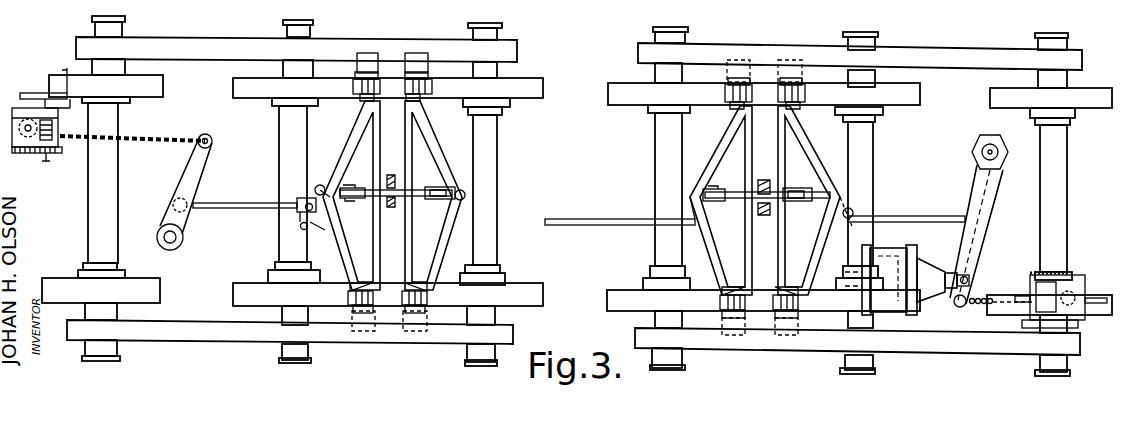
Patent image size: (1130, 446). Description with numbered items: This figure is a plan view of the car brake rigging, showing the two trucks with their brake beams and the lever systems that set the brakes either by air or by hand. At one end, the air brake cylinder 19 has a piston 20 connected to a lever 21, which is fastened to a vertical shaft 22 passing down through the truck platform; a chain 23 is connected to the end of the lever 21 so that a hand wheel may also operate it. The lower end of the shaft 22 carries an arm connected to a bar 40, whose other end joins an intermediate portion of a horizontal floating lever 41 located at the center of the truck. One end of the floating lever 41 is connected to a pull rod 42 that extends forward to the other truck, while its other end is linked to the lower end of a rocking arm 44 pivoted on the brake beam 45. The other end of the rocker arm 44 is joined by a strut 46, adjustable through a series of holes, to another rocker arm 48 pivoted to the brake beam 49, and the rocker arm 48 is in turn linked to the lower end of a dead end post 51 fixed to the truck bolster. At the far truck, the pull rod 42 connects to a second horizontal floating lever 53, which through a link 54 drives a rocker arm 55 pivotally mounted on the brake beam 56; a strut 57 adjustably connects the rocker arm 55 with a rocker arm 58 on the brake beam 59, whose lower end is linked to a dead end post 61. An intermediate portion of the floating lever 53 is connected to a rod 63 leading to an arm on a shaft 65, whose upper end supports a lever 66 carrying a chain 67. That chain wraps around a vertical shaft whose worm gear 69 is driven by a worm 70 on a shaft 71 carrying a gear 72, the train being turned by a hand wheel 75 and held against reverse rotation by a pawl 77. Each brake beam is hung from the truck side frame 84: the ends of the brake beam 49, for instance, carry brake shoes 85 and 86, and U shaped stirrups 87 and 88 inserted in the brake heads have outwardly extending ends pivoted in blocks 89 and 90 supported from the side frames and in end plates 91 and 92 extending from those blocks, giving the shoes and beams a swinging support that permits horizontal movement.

The brake cylinder 19 is at (890, 252).
The piston 20 is at (952, 275).
The lever 21 is at (980, 225).
The vertical shaft 22 is at (992, 150).
The chain 23 is at (978, 304).
The bar 40 is at (925, 216).
The horizontal floating lever 41 is at (855, 213).
The pull rod 42 is at (592, 224).
The rocking arm 44 is at (795, 188).
The brake beam 45 is at (810, 150).
The strut 46 is at (748, 192).
The rocker arm 48 is at (716, 189).
The brake beam 49 is at (722, 141).
The dead end post 51 is at (765, 216).
The second horizontal floating lever 53 is at (297, 203).
The link 54 is at (322, 185).
The rocker arm 55 is at (350, 188).
The brake beam 56 is at (352, 125).
The strut 57 is at (418, 190).
The rocker arm 58 is at (462, 190).
The brake beam 59 is at (432, 136).
The dead end post 61 is at (391, 175).
The rod 63 is at (232, 203).
The shaft 65 is at (160, 230).
The lever 66 is at (192, 154).
The chain 67 is at (200, 137).
The worm gear 69 is at (12, 130).
The worm 70 is at (60, 133).
The shaft 71 is at (58, 146).
The gear 72 is at (50, 158).
The hand wheel 75 is at (33, 93).
The pawl 77 is at (66, 70).
The side frame 84 is at (396, 42).
The brake shoe 85 is at (402, 297).
The brake shoe 86 is at (353, 88).
The U shaped stirrup 87 is at (353, 308).
The U shaped stirrup 88 is at (356, 77).
The block 89 is at (365, 320).
The block 90 is at (366, 60).
The end plate 91 is at (358, 286).
The end plate 92 is at (362, 99).